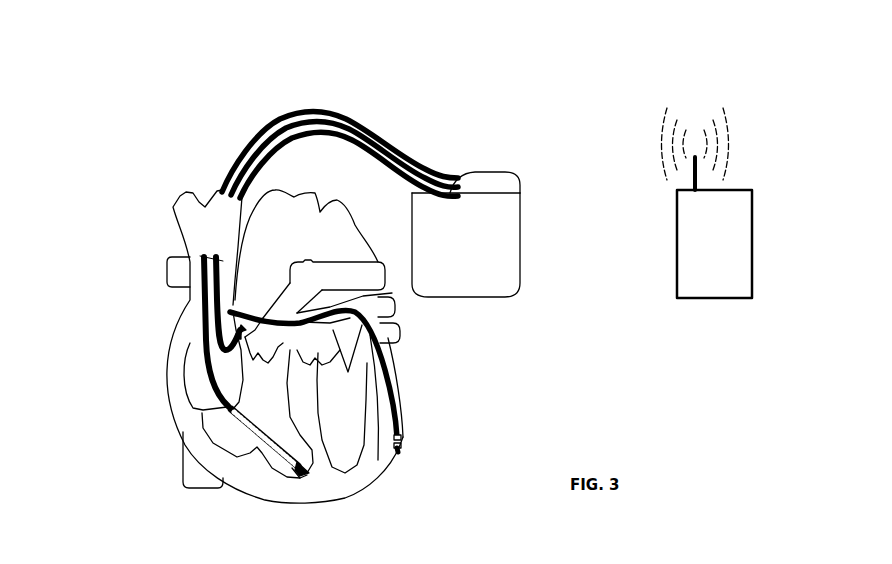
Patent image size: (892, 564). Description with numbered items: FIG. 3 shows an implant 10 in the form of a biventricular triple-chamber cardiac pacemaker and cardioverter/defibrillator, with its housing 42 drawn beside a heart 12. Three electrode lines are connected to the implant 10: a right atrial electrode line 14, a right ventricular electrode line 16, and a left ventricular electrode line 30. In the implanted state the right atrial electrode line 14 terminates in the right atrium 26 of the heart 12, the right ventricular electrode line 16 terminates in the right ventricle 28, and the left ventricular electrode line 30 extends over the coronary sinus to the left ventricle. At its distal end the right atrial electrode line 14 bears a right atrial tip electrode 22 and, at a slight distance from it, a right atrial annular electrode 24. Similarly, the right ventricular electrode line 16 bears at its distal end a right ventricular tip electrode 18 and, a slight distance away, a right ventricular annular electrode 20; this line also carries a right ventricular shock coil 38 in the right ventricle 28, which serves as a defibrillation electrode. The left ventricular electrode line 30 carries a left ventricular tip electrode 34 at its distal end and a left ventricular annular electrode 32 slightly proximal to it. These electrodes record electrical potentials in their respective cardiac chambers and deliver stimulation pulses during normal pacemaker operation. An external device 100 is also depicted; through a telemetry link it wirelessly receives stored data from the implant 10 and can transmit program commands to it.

The implant 10 is at (570, 269).
The heart 12 is at (100, 479).
The right atrial electrode line 14 is at (268, 122).
The right ventricular electrode line 16 is at (232, 160).
The right ventricular tip electrode 18 is at (303, 473).
The right ventricular annular electrode 20 is at (300, 470).
The right atrial tip electrode 22 is at (237, 331).
The right atrial annular electrode 24 is at (240, 337).
The right atrium 26 is at (195, 388).
The right ventricle 28 is at (233, 436).
The left ventricular electrode line 30 is at (317, 135).
The left ventricular annular electrode 32 is at (403, 437).
The left ventricular tip electrode 34 is at (403, 447).
The right ventricular shock coil 38 is at (246, 431).
The housing 42 is at (487, 280).
The external device 100 is at (708, 332).